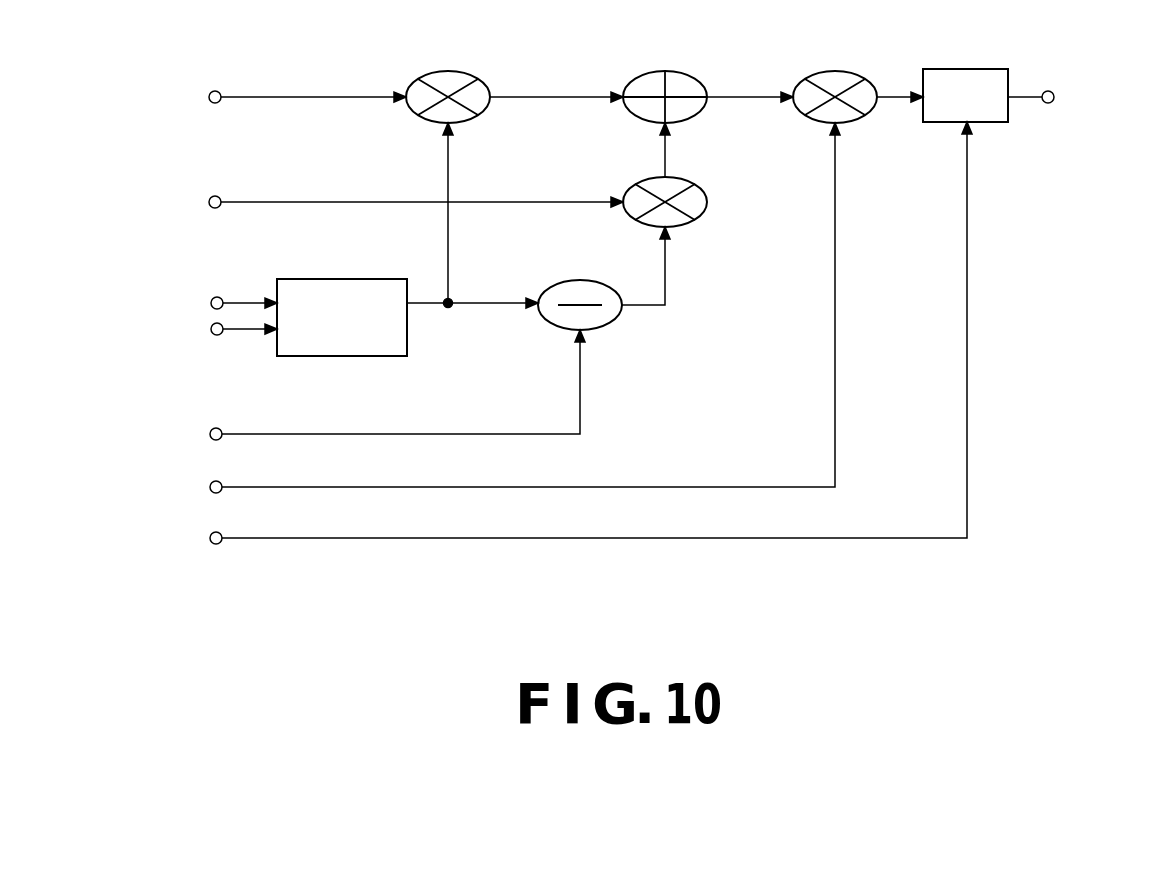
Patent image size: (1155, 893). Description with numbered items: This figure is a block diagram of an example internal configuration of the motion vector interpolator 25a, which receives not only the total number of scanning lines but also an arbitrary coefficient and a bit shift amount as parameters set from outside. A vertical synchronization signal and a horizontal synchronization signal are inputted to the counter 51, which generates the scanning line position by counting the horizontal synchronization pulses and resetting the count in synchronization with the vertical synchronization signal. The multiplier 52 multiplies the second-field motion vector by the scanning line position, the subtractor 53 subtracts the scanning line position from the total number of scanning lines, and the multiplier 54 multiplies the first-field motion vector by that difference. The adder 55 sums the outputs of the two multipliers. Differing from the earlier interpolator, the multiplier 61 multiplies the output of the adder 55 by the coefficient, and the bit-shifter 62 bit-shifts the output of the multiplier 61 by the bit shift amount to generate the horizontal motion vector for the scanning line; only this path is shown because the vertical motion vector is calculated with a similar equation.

The motion vector interpolator 25a is at (618, 623).
The counter 51 is at (345, 280).
The multiplier 52 is at (445, 73).
The subtractor 53 is at (565, 283).
The multiplier 54 is at (705, 211).
The adder 55 is at (645, 77).
The multiplier 61 is at (872, 116).
The bit-shifter 62 is at (968, 70).